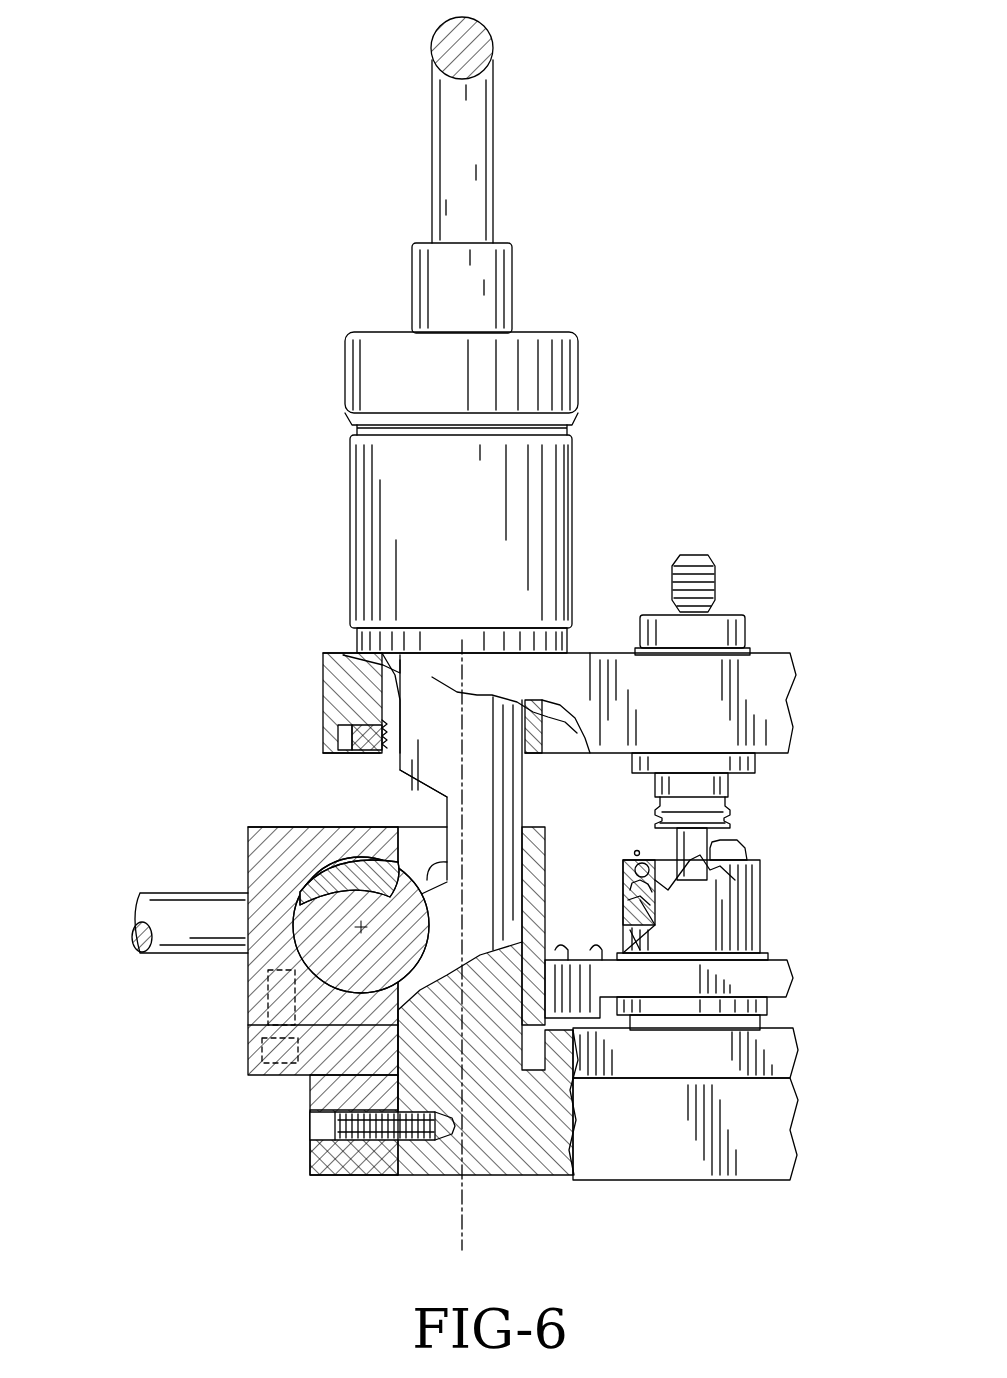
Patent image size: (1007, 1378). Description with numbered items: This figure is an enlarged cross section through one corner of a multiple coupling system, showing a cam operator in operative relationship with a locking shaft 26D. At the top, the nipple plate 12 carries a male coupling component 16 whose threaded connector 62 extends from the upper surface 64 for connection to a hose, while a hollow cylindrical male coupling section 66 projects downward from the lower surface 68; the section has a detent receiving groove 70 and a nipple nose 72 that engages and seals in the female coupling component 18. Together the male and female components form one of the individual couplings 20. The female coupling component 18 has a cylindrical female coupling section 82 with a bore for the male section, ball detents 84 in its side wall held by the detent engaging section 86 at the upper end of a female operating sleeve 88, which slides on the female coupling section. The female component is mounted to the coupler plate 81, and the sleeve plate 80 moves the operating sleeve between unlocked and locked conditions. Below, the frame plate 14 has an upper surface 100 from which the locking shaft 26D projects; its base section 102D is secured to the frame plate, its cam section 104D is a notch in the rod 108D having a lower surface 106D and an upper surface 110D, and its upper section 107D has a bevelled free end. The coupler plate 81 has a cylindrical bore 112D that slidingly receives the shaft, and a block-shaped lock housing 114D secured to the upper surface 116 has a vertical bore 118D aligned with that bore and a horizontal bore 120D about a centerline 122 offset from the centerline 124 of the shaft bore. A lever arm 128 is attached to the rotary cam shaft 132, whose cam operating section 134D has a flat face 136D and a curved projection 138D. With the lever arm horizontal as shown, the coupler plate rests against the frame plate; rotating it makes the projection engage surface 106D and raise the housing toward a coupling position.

The nipple plate 12 is at (762, 678).
The frame plate 14 is at (770, 1133).
The male coupling component 16 is at (735, 612).
The female coupling component 18 is at (727, 918).
The individual coupling 20 is at (777, 861).
The locking shaft 26D is at (443, 742).
The threaded connector 62 is at (702, 560).
The upper surface 64 is at (590, 653).
The male coupling section 66 is at (733, 790).
The lower surface 68 is at (775, 760).
The detent receiving groove 70 is at (655, 808).
The nipple nose 72 is at (700, 865).
The sleeve plate 80 is at (778, 982).
The coupler plate 81 is at (725, 1060).
The female coupling section 82 is at (735, 848).
The ball detents 84 is at (640, 865).
The detent engaging section 86 is at (628, 905).
The female operating sleeve 88 is at (747, 938).
The upper surface 100 is at (773, 1078).
The base section 102D is at (437, 937).
The cam section 104D is at (437, 852).
The lower surface 106D is at (447, 863).
The upper section 107D is at (428, 712).
The rod 108D is at (480, 835).
The upper surface 110D is at (427, 785).
The cylindrical bore 112D is at (400, 985).
The lock housing 114D is at (297, 832).
The upper surface 116 is at (775, 1022).
The vertical bore 118D is at (507, 990).
The horizontal bore 120D is at (345, 985).
The centerline 122 is at (372, 1000).
The centerline 124 is at (470, 1230).
The lever arm 128 is at (140, 905).
The cam shaft 132 is at (357, 1012).
The cam operating section 134D is at (330, 873).
The flat face 136D is at (360, 975).
The curved projection 138D is at (390, 910).